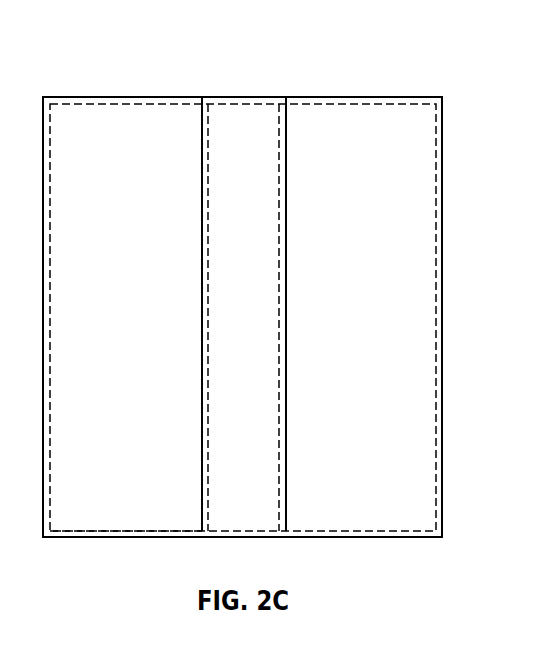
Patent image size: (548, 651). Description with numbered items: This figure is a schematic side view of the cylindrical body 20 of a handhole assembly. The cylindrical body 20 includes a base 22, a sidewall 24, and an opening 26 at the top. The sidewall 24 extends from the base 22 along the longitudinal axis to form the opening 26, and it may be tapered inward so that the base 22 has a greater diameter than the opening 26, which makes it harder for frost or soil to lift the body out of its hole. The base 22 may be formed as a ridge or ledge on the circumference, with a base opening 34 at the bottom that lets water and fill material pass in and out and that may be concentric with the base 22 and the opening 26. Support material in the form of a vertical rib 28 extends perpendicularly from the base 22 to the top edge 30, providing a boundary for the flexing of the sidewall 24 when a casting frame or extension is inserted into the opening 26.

The cylindrical body 20 is at (86, 40).
The base 22 is at (74, 539).
The sidewall 24 is at (50, 150).
The opening 26 is at (183, 98).
The rib 28 is at (245, 125).
The top edge 30 is at (442, 98).
The base opening 34 is at (150, 539).